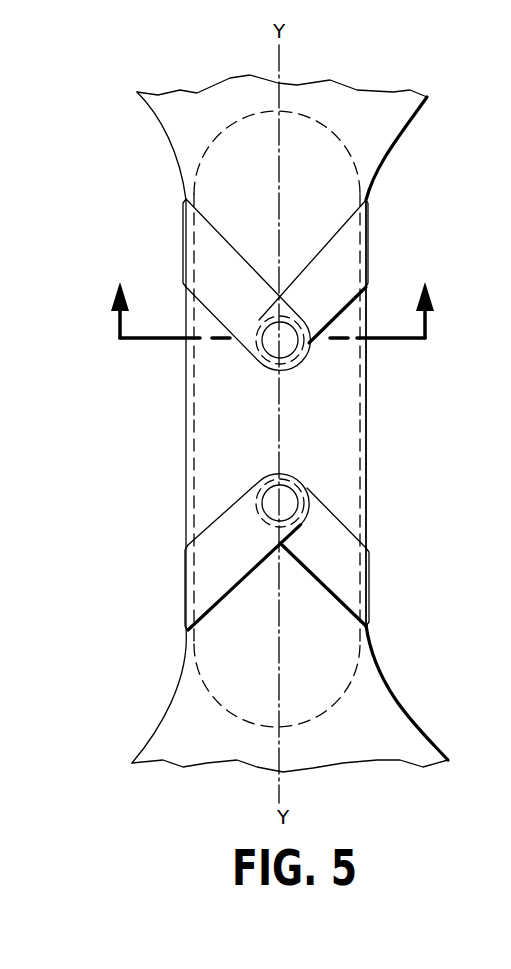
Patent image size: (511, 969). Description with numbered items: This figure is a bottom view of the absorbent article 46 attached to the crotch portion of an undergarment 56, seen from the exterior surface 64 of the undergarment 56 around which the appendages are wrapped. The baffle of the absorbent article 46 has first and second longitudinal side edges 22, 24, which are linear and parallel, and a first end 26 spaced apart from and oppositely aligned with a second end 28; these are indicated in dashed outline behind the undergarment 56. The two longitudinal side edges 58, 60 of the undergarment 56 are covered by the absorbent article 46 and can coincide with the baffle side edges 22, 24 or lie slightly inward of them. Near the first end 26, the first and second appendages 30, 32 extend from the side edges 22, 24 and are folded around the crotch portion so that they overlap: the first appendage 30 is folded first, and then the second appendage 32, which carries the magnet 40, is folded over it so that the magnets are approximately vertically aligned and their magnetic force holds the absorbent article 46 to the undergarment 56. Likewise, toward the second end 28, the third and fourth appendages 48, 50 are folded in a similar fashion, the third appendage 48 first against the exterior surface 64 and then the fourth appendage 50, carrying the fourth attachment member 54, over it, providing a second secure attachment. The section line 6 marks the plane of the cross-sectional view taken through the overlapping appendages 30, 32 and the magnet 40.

The section line 6- 6 is at (272, 299).
The first longitudinal side edge 22 is at (364, 401).
The second longitudinal side edge 24 is at (188, 408).
The first end 26 is at (328, 130).
The second end 28 is at (232, 712).
The first appendage 30 is at (340, 263).
The second appendage 32 is at (207, 255).
The second member 40 is at (301, 358).
The absorbent article 46 is at (99, 136).
The third appendage 48 is at (346, 545).
The fourth appendage 50 is at (217, 550).
The fourth attachment member 54 is at (273, 480).
The undergarment 56 is at (405, 114).
The longitudinal side edge of undergarment 58 is at (383, 672).
The longitudinal side edge of undergarment 60 is at (186, 685).
The exterior surface 64 is at (407, 748).